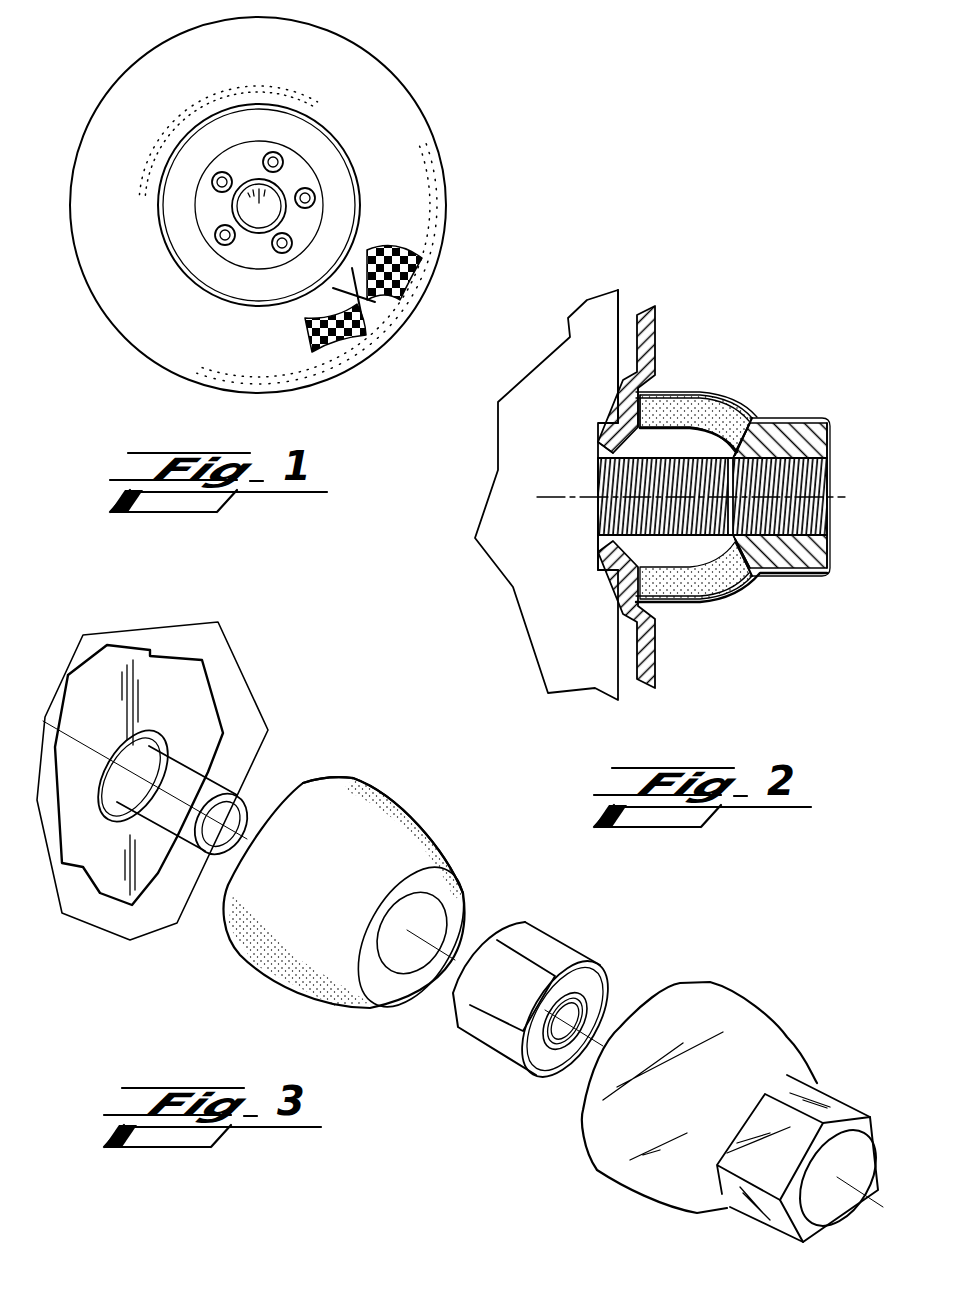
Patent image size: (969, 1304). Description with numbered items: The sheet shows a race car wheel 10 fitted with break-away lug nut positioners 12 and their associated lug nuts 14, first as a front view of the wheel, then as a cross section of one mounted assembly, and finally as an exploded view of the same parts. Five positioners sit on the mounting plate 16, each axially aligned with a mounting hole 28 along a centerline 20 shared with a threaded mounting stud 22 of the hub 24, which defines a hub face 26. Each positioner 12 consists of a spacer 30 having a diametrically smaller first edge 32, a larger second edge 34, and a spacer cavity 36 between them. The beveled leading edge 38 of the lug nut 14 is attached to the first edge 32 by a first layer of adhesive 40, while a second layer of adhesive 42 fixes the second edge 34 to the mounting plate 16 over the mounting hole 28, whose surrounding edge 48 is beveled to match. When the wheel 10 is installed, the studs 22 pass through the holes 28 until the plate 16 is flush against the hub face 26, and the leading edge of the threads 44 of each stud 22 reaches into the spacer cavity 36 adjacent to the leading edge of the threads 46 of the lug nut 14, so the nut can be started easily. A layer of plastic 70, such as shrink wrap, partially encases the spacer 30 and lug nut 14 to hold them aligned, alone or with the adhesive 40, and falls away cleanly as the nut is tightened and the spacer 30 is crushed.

In FIG. 1, the race car wheel 10 is at (445, 102).
In FIG. 2, the race car wheel 10 is at (678, 459).
In FIG. 1, the break-away lug nut positioner 12 is at (273, 151).
In FIG. 2, the break-away lug nut positioner 12 is at (747, 502).
In FIG. 3, the break-away lug nut positioner 12 is at (384, 859).
In FIG. 1, the lug nut 14 is at (314, 195).
In FIG. 2, the lug nut 14 is at (826, 418).
In FIG. 3, the lug nut 14 is at (548, 940).
In FIG. 1, the mounting plate 16 is at (205, 207).
In FIG. 2, the mounting plate 16 is at (657, 317).
In FIG. 3, the mounting plate 16 is at (155, 668).
In FIG. 2, the centerline 20 is at (843, 505).
In FIG. 3, the centerline 20 is at (73, 740).
In FIG. 2, the threaded mounting stud 22 is at (597, 520).
In FIG. 3, the threaded mounting stud 22 is at (213, 795).
In FIG. 2, the hub 24 is at (550, 373).
In FIG. 3, the hub 24 is at (139, 775).
In FIG. 2, the hub face 26 is at (620, 302).
In FIG. 3, the hub face 26 is at (223, 660).
In FIG. 2, the mounting hole 28 is at (598, 571).
In FIG. 2, the spacer 30 is at (670, 600).
In FIG. 3, the spacer 30 is at (440, 833).
In FIG. 2, the first edge 32 is at (707, 410).
In FIG. 2, the second edge 34 is at (637, 410).
In FIG. 2, the spacer cavity 36 is at (690, 438).
In FIG. 2, the leading edge 38 is at (772, 437).
In FIG. 2, the first layer of adhesive 40 is at (753, 417).
In FIG. 3, the first layer of adhesive 40 is at (458, 900).
In FIG. 2, the second layer of adhesive 42 is at (645, 392).
In FIG. 3, the second layer of adhesive 42 is at (305, 778).
In FIG. 2, the leading edge of the threads 44 is at (728, 538).
In FIG. 2, the leading edge of the threads 46 is at (830, 572).
In FIG. 2, the edge 48 is at (630, 443).
In FIG. 2, the layer of plastic 70 is at (748, 587).
In FIG. 3, the layer of plastic 70 is at (757, 1007).